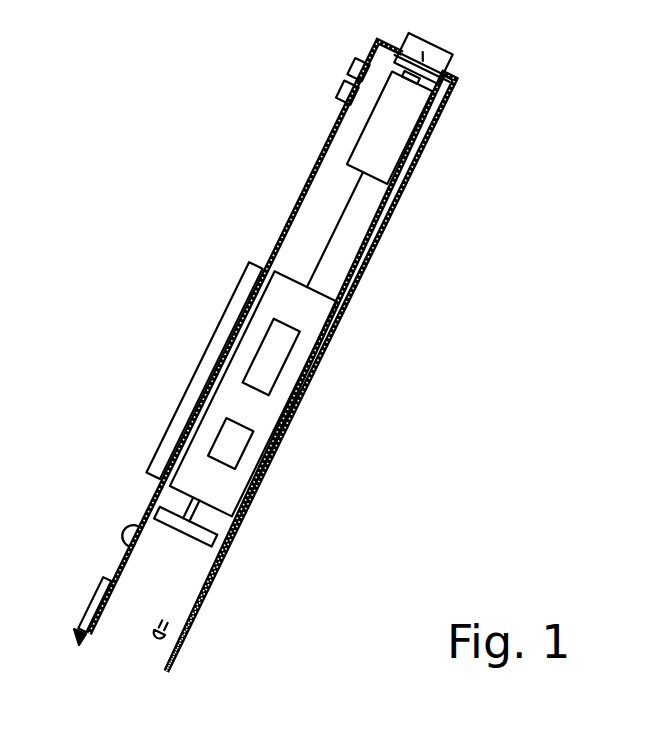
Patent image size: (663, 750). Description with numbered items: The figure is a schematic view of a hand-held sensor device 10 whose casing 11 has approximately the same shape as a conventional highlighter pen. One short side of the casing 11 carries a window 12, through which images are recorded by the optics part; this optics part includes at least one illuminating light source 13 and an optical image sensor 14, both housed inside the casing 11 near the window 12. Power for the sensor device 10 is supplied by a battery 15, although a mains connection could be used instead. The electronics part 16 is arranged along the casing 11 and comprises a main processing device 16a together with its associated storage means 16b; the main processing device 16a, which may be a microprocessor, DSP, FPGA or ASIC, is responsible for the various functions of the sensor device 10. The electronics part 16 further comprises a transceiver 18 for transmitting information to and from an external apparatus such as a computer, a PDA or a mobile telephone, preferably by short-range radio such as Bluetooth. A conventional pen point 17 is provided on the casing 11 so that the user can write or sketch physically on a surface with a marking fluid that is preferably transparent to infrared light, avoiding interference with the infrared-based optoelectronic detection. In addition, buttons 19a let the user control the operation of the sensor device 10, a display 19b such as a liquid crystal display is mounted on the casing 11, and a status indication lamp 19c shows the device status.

The sensor device 10 is at (266, 188).
The casing 11 is at (366, 257).
The window 12 is at (122, 652).
The illuminating light source 13 is at (164, 637).
The optical image sensor 14 is at (212, 532).
The battery 15 is at (384, 163).
The electronics part 16 is at (286, 312).
The main processing device 16a is at (254, 386).
The storage means 16b is at (230, 453).
The pen point 17 is at (95, 598).
The transceiver 18 is at (431, 50).
The buttons 19a is at (336, 100).
The display 19b is at (213, 358).
The status indication lamp 19c is at (127, 531).